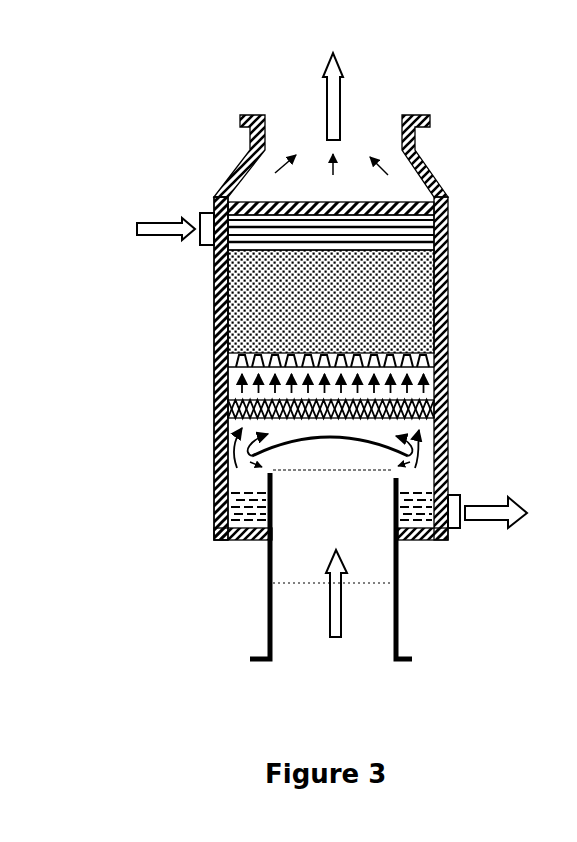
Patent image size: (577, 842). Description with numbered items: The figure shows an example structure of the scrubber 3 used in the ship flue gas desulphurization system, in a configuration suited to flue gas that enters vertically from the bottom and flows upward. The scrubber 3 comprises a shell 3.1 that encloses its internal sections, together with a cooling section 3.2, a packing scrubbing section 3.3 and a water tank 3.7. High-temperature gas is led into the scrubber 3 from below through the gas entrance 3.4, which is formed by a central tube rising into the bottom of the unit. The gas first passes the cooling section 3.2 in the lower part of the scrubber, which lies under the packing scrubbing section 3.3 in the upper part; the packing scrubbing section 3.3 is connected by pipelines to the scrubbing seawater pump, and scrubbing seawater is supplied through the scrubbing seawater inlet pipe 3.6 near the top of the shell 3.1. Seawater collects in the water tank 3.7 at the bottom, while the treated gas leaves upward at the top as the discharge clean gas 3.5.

The scrubber 3 is at (287, 405).
The shell 3.1 is at (165, 368).
The cooling section 3.2 is at (376, 375).
The packing scrubbing section 3.3 is at (377, 293).
The gas entrance 3.4 is at (384, 586).
The discharge clean gas 3.5 is at (356, 115).
The scrubbing seawater inlet pipe 3.6 is at (170, 250).
The water tank 3.7 is at (278, 474).